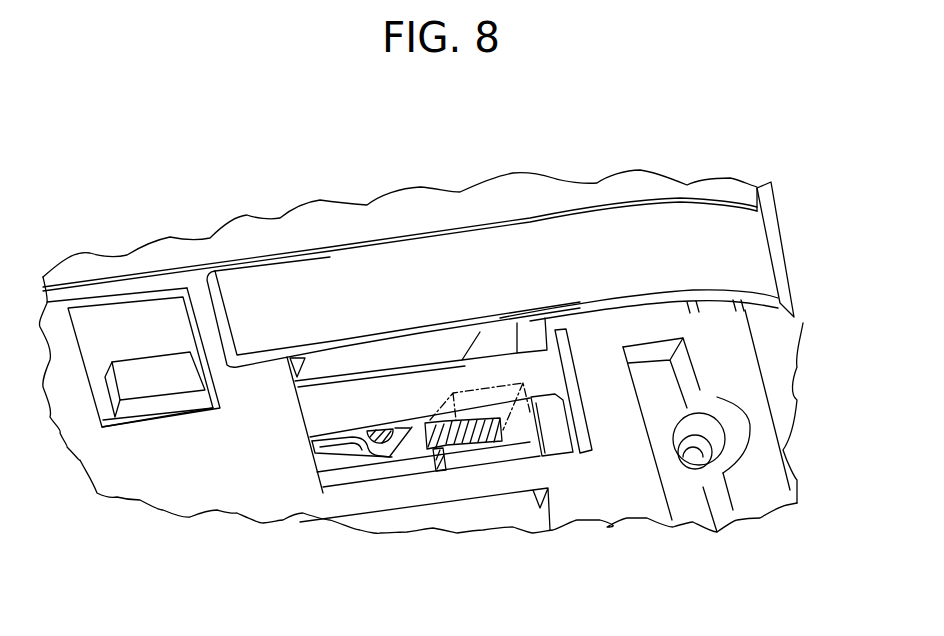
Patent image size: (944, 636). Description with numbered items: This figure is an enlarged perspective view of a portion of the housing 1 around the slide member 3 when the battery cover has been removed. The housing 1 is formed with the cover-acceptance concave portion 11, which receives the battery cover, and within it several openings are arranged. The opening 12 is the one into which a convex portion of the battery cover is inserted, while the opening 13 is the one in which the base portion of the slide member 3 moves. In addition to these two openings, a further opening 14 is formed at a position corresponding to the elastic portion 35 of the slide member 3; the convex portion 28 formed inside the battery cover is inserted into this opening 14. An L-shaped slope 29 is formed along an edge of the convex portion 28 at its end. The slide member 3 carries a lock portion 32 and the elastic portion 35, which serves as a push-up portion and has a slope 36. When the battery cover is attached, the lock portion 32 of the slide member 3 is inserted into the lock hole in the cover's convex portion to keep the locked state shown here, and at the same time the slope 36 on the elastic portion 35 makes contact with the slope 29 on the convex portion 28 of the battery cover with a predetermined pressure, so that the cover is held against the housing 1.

The housing 1 is at (260, 238).
The slide member 3 is at (641, 264).
The cover-acceptance concave portion 11 is at (257, 495).
The opening 12 is at (123, 321).
The opening 13 is at (478, 350).
The opening 14 is at (553, 442).
The convex portion 28 is at (445, 455).
The slope 29 is at (441, 447).
The lock portion 32 is at (150, 385).
The elastic portion 35 is at (367, 449).
The slope 36 is at (381, 440).